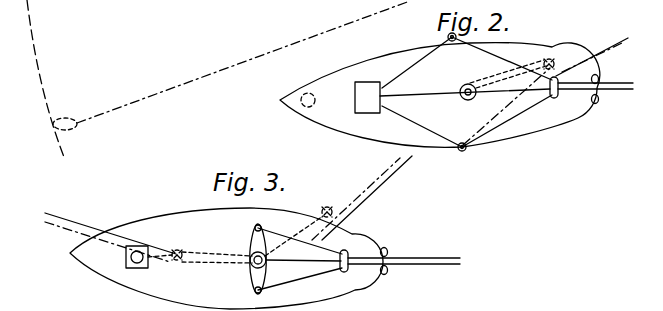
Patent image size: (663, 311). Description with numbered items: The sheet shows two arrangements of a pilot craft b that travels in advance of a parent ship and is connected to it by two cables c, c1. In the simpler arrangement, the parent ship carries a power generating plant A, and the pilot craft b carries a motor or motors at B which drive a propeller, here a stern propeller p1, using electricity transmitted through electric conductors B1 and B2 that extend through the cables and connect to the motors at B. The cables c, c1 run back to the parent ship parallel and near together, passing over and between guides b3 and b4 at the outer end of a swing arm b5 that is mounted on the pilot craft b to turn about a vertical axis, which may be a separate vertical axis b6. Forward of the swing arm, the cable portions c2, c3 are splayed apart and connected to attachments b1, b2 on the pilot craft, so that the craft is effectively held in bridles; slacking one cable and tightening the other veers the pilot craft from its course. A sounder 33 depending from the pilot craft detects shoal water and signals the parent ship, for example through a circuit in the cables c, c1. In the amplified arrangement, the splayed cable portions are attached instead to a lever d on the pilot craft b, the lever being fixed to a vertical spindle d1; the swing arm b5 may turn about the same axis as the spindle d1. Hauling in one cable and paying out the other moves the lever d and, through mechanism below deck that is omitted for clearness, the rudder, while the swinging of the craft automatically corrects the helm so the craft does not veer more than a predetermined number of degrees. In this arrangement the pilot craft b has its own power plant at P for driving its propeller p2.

In FIG. 2, the pilot craft b is at (352, 62).
In FIG. 3, the pilot craft b is at (216, 300).
In FIG. 2, the attachment b1 is at (448, 37).
In FIG. 3, the attachment b1 is at (330, 238).
In FIG. 2, the attachment b2 is at (459, 150).
In FIG. 3, the guide b3 is at (208, 253).
In FIG. 2, the guide b4 is at (556, 66).
In FIG. 3, the guide b4 is at (372, 237).
In FIG. 2, the swing arm b5 is at (432, 96).
In FIG. 3, the swing arm b5 is at (322, 283).
In FIG. 2, the vertical axis b6 is at (466, 84).
In FIG. 2, the motor B is at (355, 97).
In FIG. 2, the electric conductor B1 is at (413, 66).
In FIG. 2, the electric conductor B2 is at (421, 125).
In FIG. 2, the cable c is at (600, 82).
In FIG. 3, the cable c is at (58, 228).
In FIG. 2, the cable c1 is at (612, 92).
In FIG. 3, the cable c1 is at (78, 224).
In FIG. 2, the forward cable portion c2 is at (507, 58).
In FIG. 2, the forward cable portion c3 is at (517, 112).
In FIG. 3, the lever d is at (255, 237).
In FIG. 3, the vertical spindle d1 is at (252, 268).
In FIG. 2, the stern propeller p1 is at (594, 105).
In FIG. 3, the propeller p2 is at (390, 250).
In FIG. 3, the power plant P is at (126, 252).
In FIG. 3, the power generating plant A is at (252, 253).
In FIG. 2, the sounder 33 is at (304, 107).